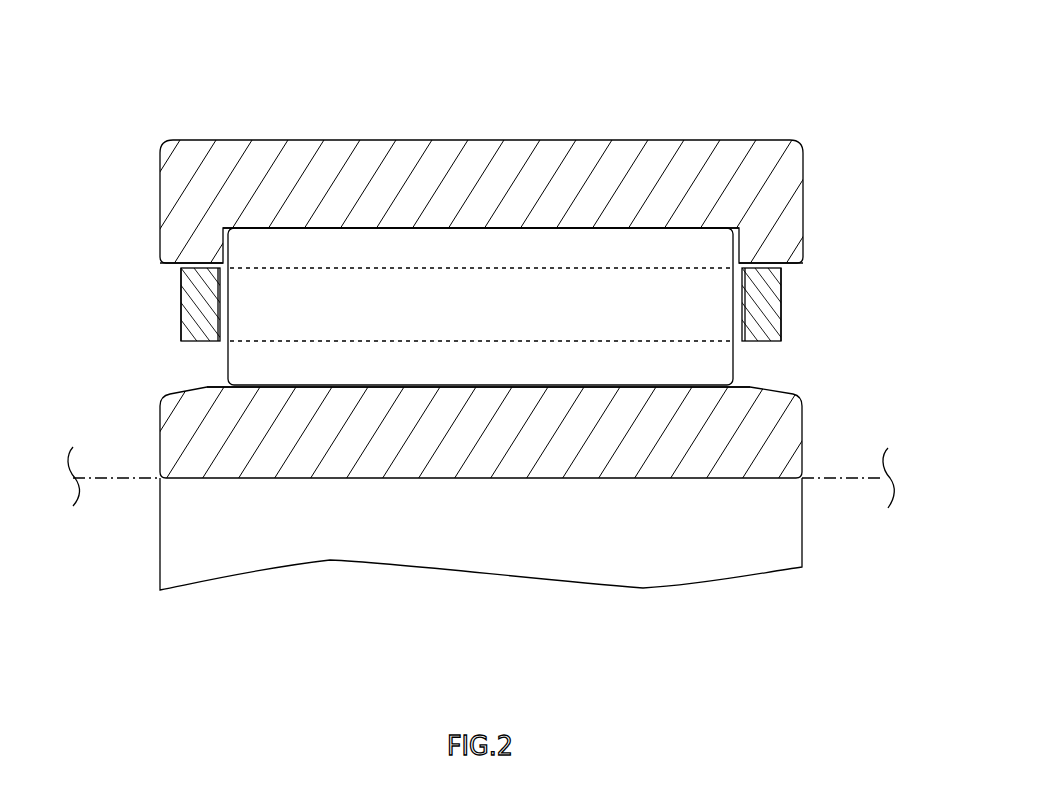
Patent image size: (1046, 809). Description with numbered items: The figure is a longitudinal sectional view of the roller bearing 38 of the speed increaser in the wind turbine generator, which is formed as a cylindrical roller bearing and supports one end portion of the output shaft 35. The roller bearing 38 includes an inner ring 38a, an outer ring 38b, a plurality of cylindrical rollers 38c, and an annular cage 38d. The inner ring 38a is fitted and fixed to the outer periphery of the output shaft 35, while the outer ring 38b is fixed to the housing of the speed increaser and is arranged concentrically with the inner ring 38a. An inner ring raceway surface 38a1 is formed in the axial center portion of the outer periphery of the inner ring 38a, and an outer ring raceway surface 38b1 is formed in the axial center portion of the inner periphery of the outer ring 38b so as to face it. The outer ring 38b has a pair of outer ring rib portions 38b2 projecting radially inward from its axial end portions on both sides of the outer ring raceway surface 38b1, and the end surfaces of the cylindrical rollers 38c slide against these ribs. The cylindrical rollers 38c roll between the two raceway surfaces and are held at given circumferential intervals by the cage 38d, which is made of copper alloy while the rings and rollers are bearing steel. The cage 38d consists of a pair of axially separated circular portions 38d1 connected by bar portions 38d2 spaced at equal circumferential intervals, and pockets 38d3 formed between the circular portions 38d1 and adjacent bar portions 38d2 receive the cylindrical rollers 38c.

The roller bearing 38 is at (482, 347).
The inner ring 38a is at (552, 478).
The inner ring raceway surface 38a1 is at (355, 387).
The outer ring 38b is at (453, 140).
The outer ring raceway surface 38b1 is at (508, 228).
The outer ring rib portions 38b2 is at (160, 264).
The cylindrical rollers 38c is at (735, 366).
The cage 38d is at (792, 338).
The circular portions 38d1 is at (182, 293).
The bar portions 38d2 is at (390, 272).
The pockets 38d3 is at (218, 348).
The output shaft 35 is at (128, 475).